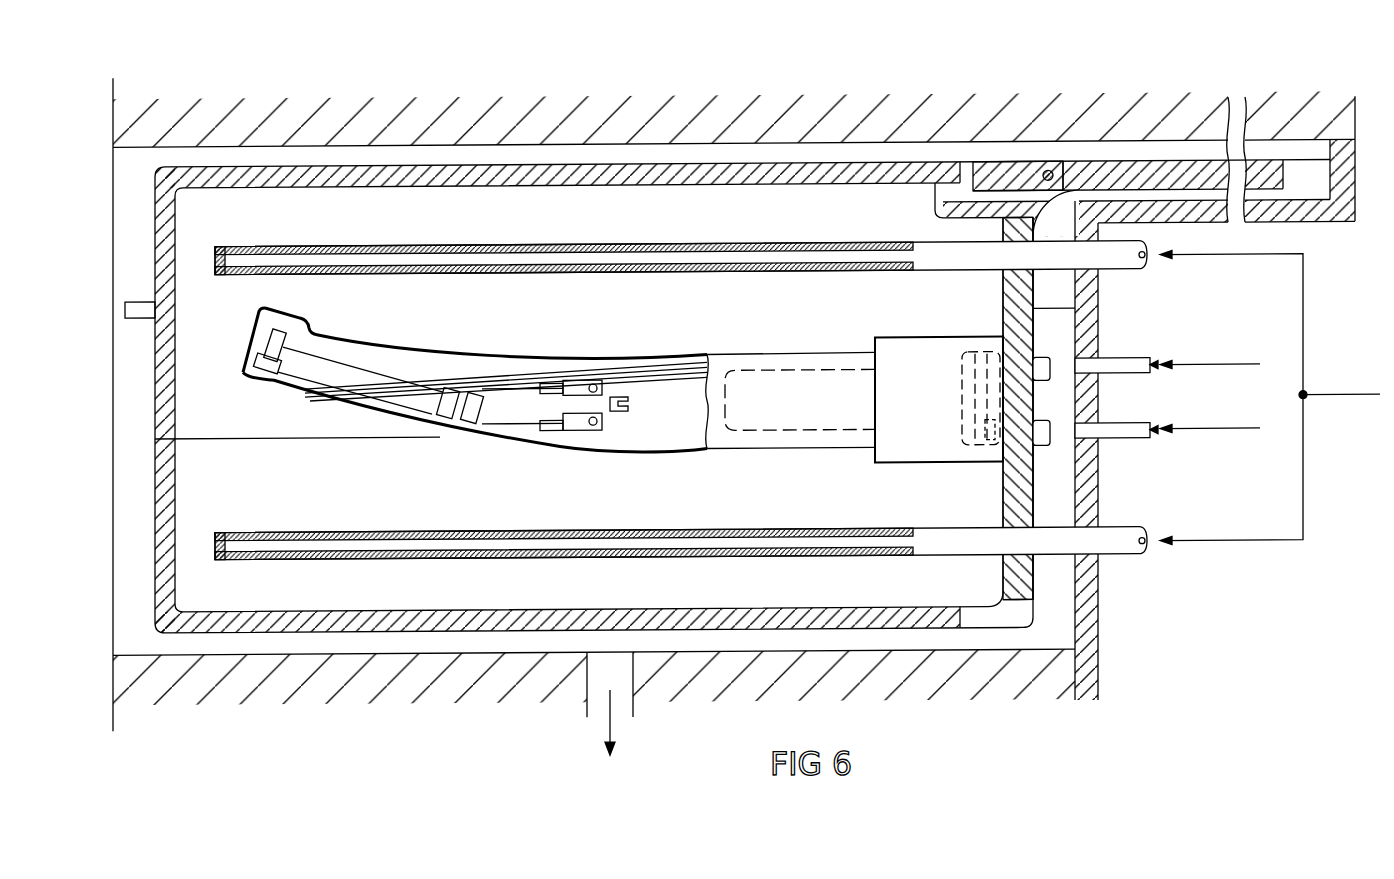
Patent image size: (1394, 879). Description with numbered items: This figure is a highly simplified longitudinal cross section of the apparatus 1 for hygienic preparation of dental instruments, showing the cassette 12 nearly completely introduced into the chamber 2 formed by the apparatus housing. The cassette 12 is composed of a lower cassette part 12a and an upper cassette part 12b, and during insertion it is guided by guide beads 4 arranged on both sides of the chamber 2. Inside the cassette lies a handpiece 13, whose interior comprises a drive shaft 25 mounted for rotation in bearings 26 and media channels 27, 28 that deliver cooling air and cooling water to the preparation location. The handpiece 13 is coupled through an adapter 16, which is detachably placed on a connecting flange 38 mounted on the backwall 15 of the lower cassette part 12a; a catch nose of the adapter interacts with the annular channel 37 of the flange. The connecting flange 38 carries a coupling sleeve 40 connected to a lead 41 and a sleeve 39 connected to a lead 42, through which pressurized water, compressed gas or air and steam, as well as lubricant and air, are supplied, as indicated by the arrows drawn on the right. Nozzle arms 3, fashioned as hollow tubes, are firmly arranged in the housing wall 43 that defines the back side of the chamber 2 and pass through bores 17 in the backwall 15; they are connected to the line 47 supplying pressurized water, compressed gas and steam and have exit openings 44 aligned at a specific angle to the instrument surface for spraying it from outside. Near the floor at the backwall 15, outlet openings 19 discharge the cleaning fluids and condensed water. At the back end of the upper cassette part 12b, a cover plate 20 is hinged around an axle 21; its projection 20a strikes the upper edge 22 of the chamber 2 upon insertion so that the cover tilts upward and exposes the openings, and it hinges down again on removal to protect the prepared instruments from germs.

The apparatus 1 is at (123, 123).
The chamber 2 is at (125, 440).
The nozzle arms 3 is at (681, 412).
The guide beads 4 is at (137, 314).
The cassette 12 is at (696, 396).
The lower cassette part 12a is at (150, 581).
The upper cassette part 12b is at (167, 273).
The handpiece 13 is at (430, 354).
The backwall 15 is at (1027, 574).
The adapter 16 is at (912, 357).
The bores 17 is at (1040, 247).
The outlet openings 19 is at (998, 624).
The cover plate 20 is at (1187, 180).
The projection 20a is at (992, 180).
The axle 21 is at (1048, 179).
The upper edge 22 is at (113, 151).
The drive shaft 25 is at (493, 411).
The bearing 26 is at (593, 433).
The media channel 27 is at (617, 363).
The media channel 28 is at (668, 363).
The annular channel 37 is at (987, 432).
The connecting flange 38 is at (965, 427).
The sleeve 39 is at (1045, 453).
The coupling sleeve 40 is at (1045, 366).
The lead 41 is at (1125, 372).
The lead 42 is at (1133, 437).
The housing wall 43 is at (1087, 634).
The exit openings 44 is at (370, 277).
The line 47 is at (1303, 309).